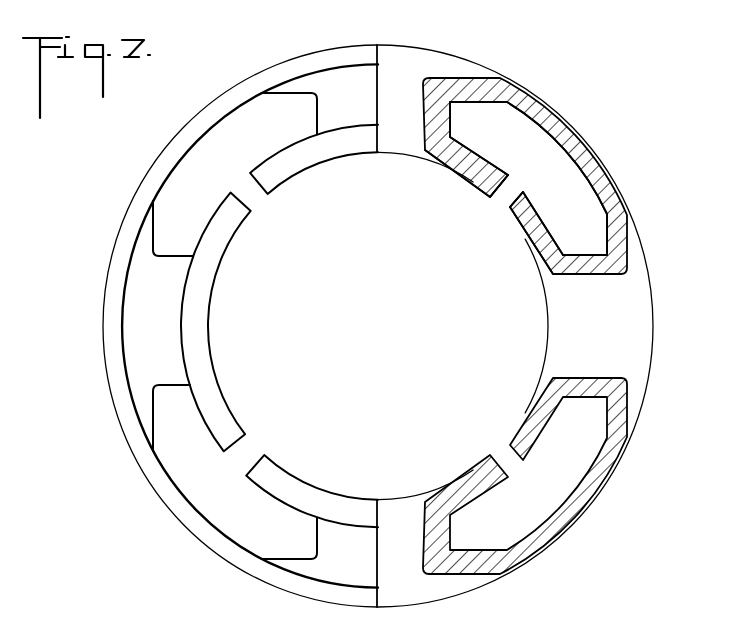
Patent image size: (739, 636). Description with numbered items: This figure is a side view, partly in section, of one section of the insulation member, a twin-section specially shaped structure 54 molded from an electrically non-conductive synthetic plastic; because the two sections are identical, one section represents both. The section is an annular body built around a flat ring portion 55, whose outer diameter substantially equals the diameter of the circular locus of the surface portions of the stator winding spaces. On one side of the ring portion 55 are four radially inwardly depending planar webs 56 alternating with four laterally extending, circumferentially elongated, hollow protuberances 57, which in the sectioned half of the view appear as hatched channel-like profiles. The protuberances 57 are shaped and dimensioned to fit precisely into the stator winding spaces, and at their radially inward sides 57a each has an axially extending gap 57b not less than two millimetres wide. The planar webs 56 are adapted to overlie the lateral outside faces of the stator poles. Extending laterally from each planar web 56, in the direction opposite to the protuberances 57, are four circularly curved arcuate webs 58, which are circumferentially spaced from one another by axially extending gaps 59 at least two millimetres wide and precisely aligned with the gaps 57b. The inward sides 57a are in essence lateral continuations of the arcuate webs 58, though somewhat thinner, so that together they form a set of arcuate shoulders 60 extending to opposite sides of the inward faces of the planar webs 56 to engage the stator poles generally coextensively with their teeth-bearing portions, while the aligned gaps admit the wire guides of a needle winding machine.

The twin-section specially shaped structure 54 is at (113, 208).
The flat ring portion 55 is at (258, 78).
The planar webs 56 is at (136, 312).
The hollow protuberances 57 is at (561, 128).
The radially inward sides 57a is at (479, 182).
The axially extending gaps 57b is at (518, 208).
The arcuate webs 58 is at (270, 470).
The axially extending gaps 59 is at (263, 197).
The arcuate shoulders 60 is at (488, 186).